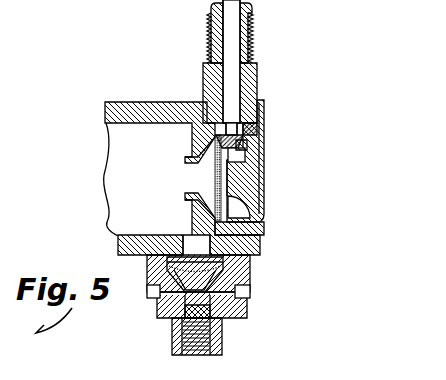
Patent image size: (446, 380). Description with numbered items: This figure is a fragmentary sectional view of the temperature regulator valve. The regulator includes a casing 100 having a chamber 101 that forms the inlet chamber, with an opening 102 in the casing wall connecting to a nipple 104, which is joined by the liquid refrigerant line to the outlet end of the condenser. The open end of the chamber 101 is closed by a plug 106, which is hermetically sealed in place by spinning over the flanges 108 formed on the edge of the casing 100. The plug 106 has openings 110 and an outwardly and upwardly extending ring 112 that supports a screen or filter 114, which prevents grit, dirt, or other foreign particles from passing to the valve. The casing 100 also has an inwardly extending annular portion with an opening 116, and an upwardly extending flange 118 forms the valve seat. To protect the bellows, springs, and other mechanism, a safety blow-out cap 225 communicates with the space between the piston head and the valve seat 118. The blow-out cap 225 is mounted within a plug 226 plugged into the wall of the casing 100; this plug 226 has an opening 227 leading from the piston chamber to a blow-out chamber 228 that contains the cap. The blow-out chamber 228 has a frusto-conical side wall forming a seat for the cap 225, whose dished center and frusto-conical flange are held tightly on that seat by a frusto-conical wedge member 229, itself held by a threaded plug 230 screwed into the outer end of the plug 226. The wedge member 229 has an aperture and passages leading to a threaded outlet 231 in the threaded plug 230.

The casing 100 is at (260, 244).
The chamber 101 is at (250, 132).
The opening 102 is at (256, 96).
The nipple 104 is at (252, 70).
The plug 106 is at (251, 165).
The flanges 108 is at (263, 226).
The openings 110 is at (245, 144).
The ring 112 is at (237, 128).
The screen or filter 114 is at (216, 186).
The opening 116 is at (188, 176).
The flange 118 is at (182, 196).
The safety blow-out cap 225 is at (246, 278).
The plug 226 is at (250, 262).
The opening 227 is at (190, 243).
The blow-out chamber 228 is at (158, 290).
The wedge member 229 is at (248, 297).
The threaded plug 230 is at (225, 320).
The threaded outlet 231 is at (200, 350).